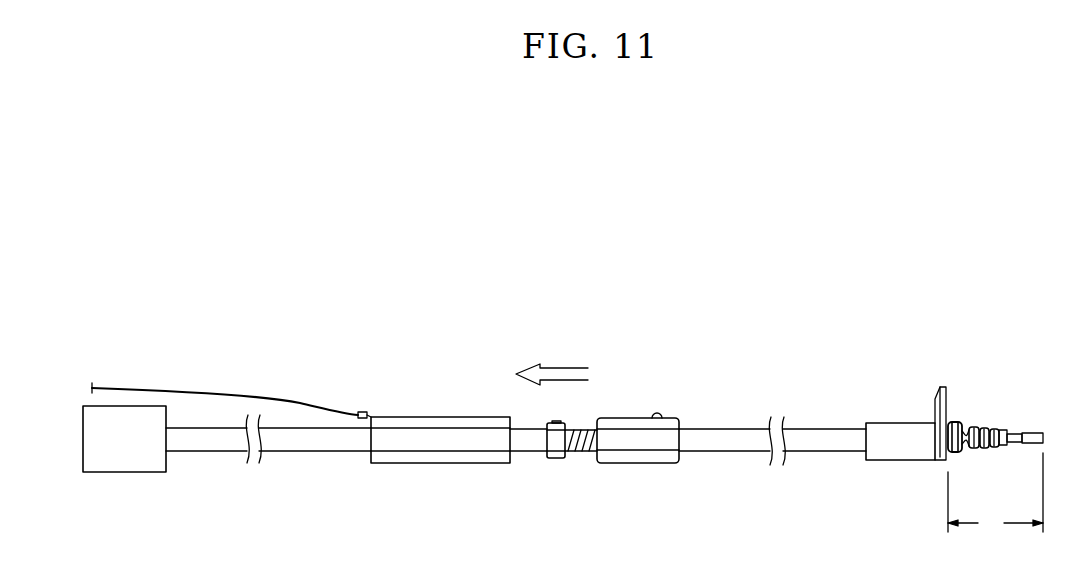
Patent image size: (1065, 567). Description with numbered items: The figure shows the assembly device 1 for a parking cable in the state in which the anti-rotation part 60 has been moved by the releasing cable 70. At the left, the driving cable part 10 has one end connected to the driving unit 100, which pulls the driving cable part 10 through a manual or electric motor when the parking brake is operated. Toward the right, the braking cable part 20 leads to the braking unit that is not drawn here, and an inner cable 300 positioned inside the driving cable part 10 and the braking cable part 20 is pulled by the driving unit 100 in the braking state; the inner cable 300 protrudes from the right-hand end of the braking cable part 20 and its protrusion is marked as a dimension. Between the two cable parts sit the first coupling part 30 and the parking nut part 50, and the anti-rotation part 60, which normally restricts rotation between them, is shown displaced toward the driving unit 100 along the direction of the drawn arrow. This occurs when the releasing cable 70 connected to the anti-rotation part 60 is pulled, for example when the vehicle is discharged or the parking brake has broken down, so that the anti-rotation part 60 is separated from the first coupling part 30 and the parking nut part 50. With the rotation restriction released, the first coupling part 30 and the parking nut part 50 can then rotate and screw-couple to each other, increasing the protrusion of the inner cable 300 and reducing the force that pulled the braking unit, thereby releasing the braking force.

The assembly device 1 is at (968, 201).
The driving cable part 10 is at (318, 430).
The braking cable part 20 is at (823, 437).
The first coupling part 30 is at (556, 460).
The parking nut part 50 is at (644, 437).
The anti-rotation part 60 is at (442, 416).
The releasing cable 70 is at (218, 392).
The driving unit 100 is at (122, 405).
The inner cable 300 is at (1006, 408).